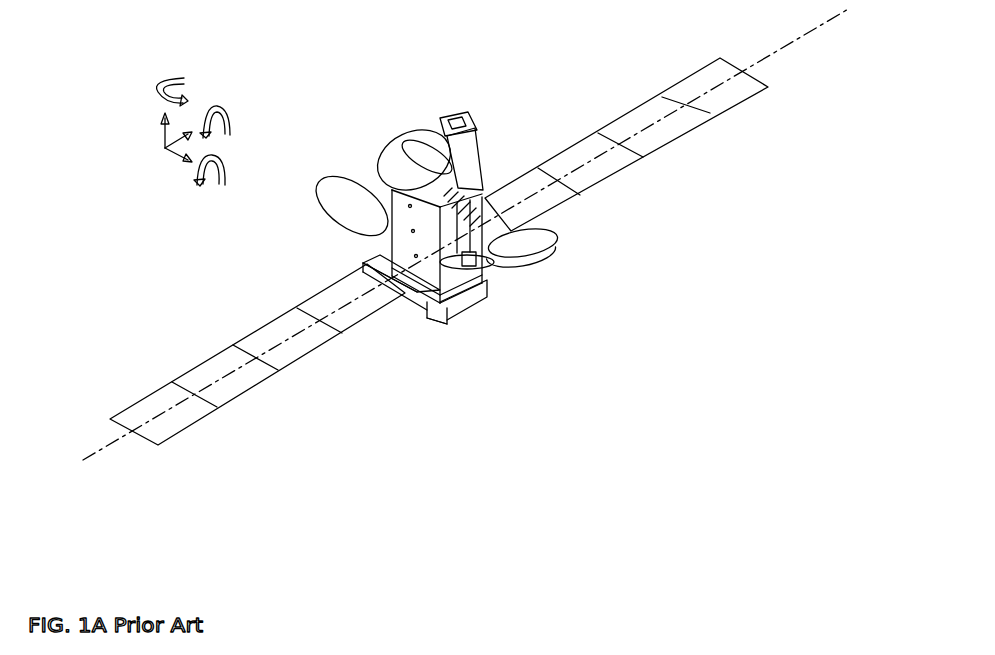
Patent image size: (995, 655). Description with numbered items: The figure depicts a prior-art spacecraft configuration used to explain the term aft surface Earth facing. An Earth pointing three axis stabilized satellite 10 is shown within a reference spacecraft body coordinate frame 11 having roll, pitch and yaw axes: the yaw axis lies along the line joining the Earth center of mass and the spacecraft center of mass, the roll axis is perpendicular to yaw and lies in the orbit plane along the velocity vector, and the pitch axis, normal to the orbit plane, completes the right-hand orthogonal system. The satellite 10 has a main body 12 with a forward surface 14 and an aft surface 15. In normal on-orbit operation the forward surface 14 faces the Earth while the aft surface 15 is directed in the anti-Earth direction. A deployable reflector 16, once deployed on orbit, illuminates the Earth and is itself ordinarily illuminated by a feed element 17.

The satellite 10 is at (443, 333).
The reference spacecraft body coordinate frame 11 is at (138, 57).
The main body 12 is at (486, 172).
The forward surface 14 is at (411, 198).
The aft surface 15 is at (476, 300).
The deployable reflector 16 is at (545, 252).
The feed element 17 is at (493, 222).